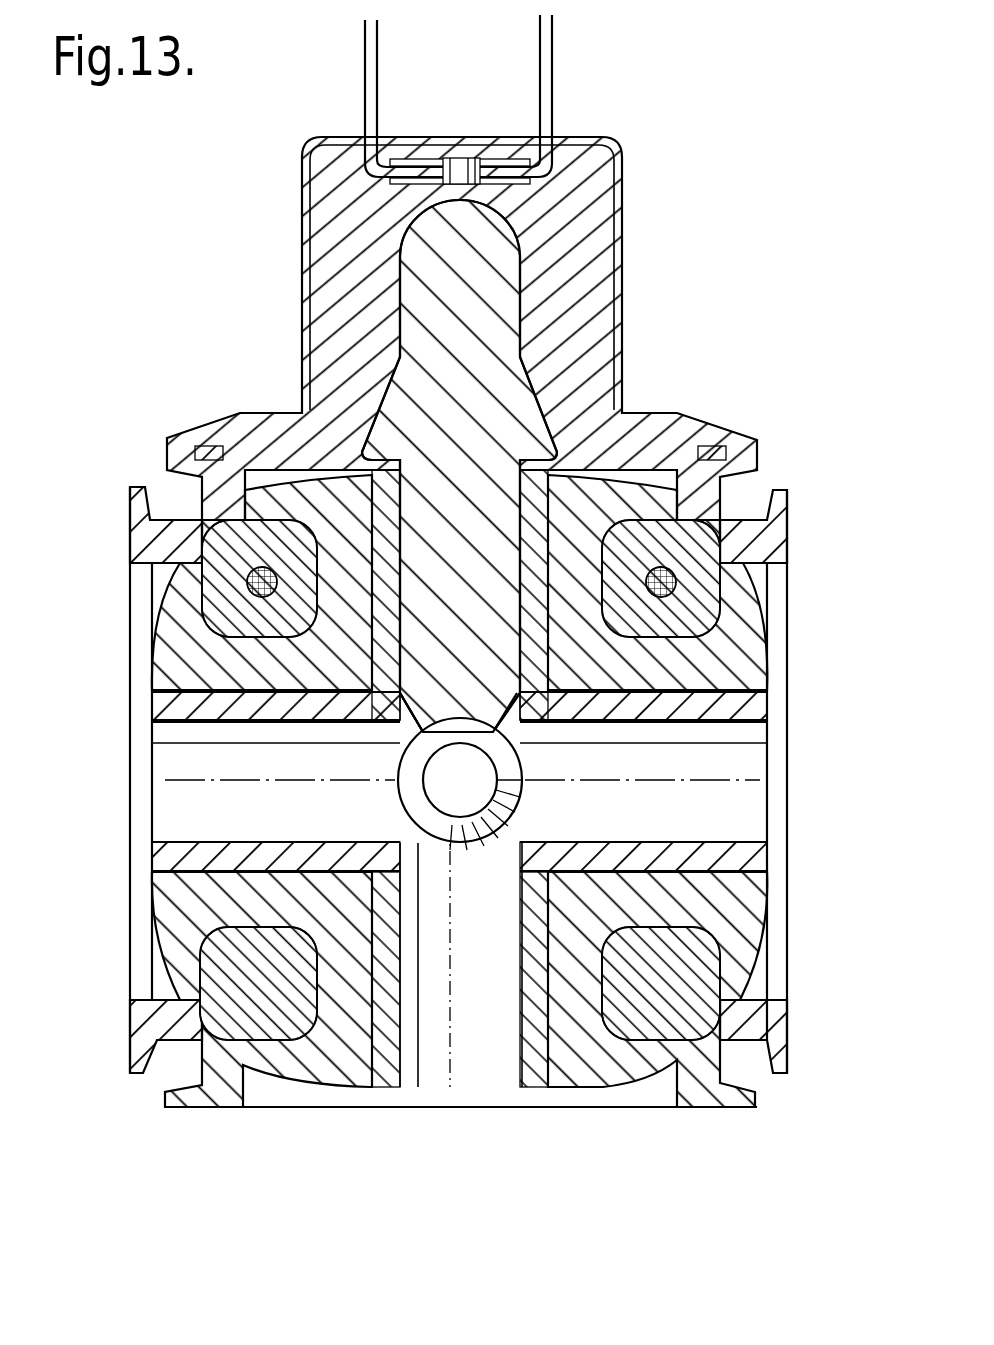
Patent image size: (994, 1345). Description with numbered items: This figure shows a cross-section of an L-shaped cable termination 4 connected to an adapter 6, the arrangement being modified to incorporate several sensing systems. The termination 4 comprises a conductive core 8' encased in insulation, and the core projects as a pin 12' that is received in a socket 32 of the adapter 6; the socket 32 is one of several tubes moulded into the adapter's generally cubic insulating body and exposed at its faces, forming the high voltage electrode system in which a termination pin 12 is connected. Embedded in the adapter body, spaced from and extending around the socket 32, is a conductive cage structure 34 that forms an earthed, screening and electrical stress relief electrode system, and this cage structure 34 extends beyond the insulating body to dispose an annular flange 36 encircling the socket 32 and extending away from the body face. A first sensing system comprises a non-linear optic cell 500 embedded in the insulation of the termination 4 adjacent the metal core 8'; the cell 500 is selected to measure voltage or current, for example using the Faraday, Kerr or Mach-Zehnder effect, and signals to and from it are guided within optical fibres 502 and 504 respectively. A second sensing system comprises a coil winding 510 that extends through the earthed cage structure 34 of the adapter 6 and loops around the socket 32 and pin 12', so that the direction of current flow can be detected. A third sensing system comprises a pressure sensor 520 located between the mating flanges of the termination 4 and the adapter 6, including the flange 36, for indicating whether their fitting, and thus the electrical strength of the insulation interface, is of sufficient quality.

The termination 4 is at (302, 292).
The adapter 6 is at (423, 1123).
The conductive core 8' is at (391, 455).
The pin 12 is at (415, 784).
The pin 12' is at (363, 745).
The socket 32 is at (172, 853).
The conductive cage structure 34 is at (220, 608).
The annular flange 36 is at (788, 484).
The non-linear optic cell 500 is at (460, 167).
The optical fibre 502 is at (352, 118).
The optical fibre 504 is at (553, 42).
The coil winding 510 is at (245, 581).
The pressure sensor 520 is at (717, 447).